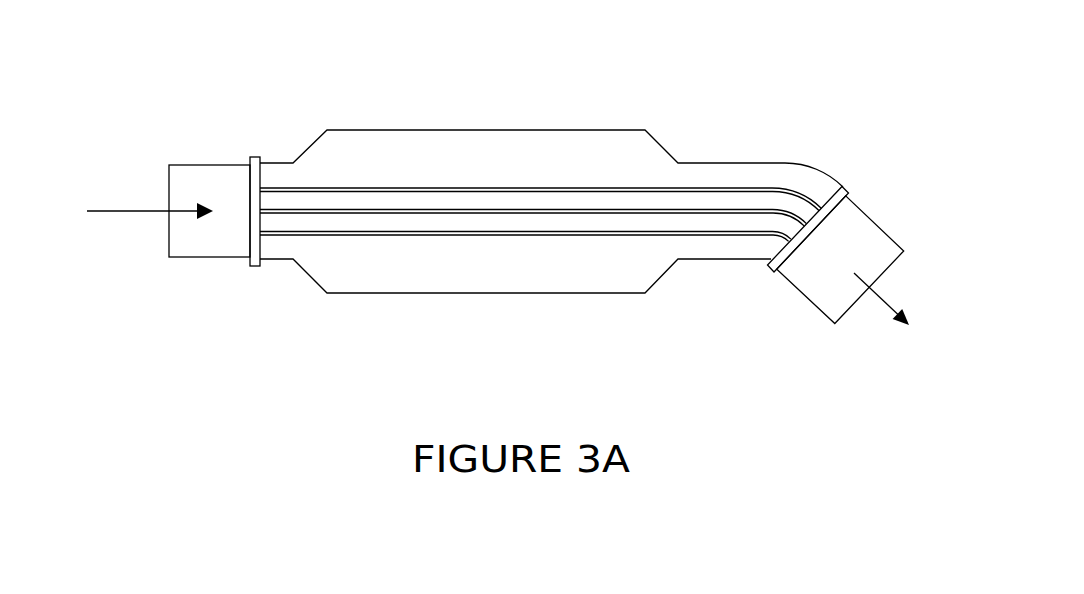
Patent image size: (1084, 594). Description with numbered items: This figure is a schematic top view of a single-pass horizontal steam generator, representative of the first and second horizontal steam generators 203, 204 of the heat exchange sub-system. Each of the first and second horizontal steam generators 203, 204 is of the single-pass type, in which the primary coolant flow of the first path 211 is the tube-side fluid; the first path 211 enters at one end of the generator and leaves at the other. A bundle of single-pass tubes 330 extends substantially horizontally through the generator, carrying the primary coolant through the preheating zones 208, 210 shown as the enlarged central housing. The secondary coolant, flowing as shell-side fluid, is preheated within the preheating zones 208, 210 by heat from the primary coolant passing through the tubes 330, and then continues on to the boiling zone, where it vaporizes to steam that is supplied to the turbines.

The first horizontal steam generator 203 is at (501, 162).
The second horizontal steam generator 204 is at (786, 54).
The preheating zone 208 is at (551, 198).
The preheating zone 210 is at (560, 147).
The first path 211 is at (143, 210).
The single-pass tubes 330 is at (432, 233).